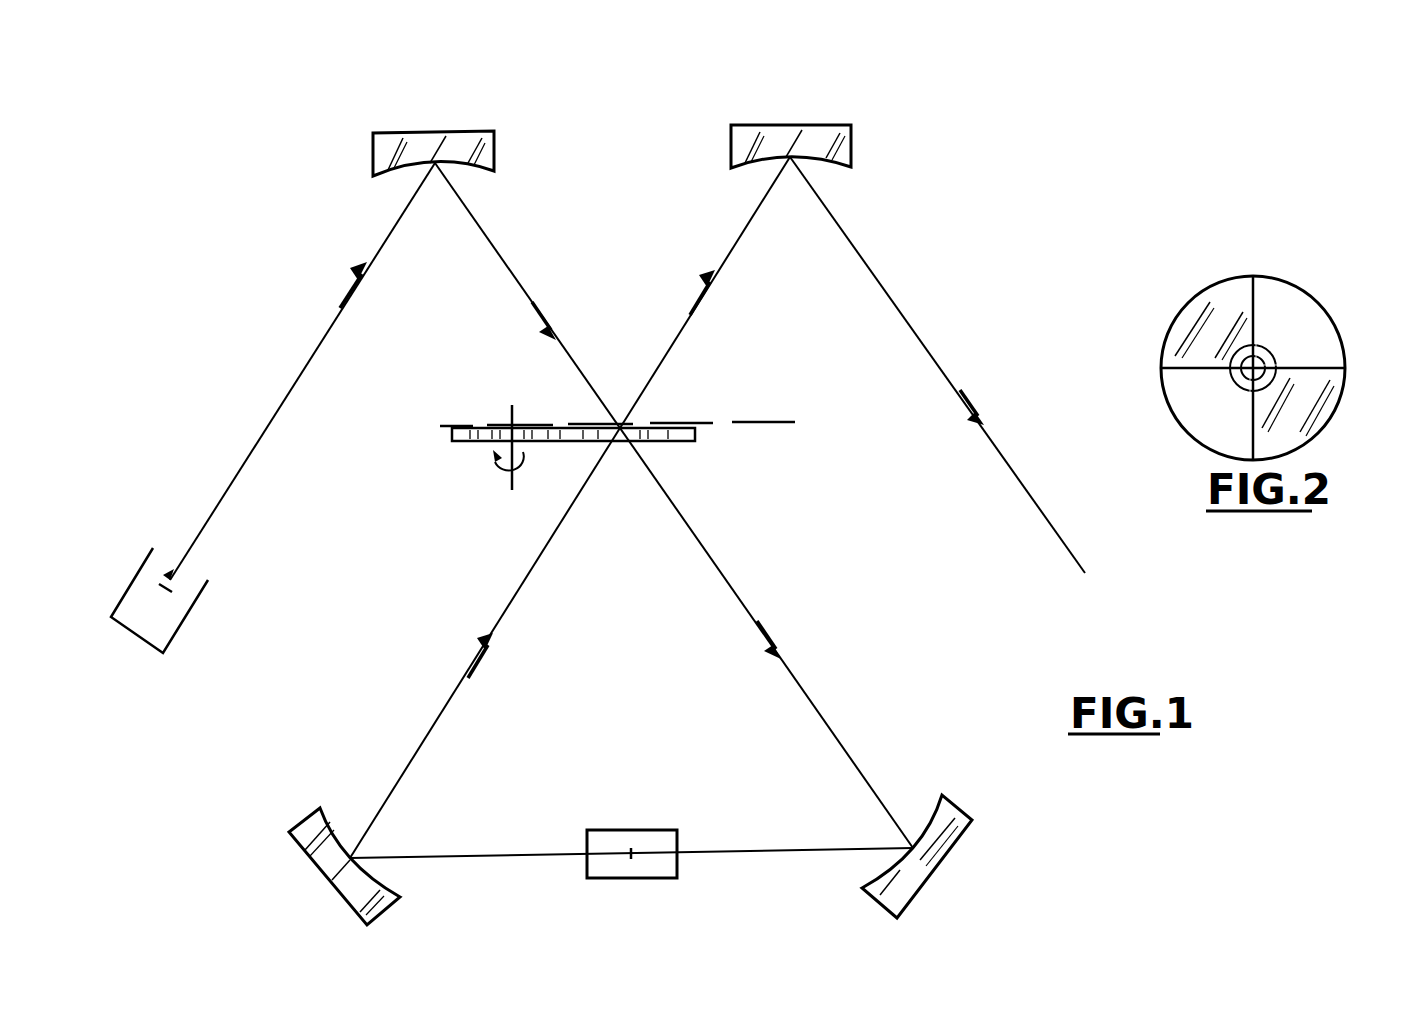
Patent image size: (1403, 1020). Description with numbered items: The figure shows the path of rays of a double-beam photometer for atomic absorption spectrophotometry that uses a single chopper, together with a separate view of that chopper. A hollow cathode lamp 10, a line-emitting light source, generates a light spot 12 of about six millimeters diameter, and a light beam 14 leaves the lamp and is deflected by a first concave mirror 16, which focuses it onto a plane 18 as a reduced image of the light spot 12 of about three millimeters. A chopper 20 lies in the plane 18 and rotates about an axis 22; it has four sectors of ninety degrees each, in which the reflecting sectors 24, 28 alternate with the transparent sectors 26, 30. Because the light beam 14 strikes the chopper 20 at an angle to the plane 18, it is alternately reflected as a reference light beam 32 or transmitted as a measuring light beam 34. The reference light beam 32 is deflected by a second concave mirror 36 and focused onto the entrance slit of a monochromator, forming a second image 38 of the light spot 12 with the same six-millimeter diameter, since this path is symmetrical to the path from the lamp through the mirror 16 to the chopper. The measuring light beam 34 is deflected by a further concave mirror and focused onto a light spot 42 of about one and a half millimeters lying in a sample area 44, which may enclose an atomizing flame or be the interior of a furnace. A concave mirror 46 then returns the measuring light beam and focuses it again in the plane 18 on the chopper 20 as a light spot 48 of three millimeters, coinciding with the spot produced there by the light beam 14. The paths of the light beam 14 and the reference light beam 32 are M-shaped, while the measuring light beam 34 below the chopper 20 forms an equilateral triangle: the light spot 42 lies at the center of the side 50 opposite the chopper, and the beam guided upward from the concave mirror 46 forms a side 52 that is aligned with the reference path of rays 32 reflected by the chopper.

In FIG. 1, the hollow cathode lamp 10 is at (131, 578).
In FIG. 1, the light spot 12 is at (164, 584).
In FIG. 1, the light beam 14 is at (297, 378).
In FIG. 1, the first concave mirror 16 is at (494, 150).
In FIG. 1, the plane 18 is at (765, 421).
In FIG. 1, the chopper 20 is at (481, 428).
In FIG. 2, the chopper 20 is at (1322, 292).
In FIG. 1, the axis 22 is at (514, 408).
In FIG. 2, the reflecting sector 24 is at (1172, 342).
In FIG. 2, the transparent sector 26 is at (1330, 341).
In FIG. 2, the reflecting sector 28 is at (1322, 418).
In FIG. 2, the transparent sector 30 is at (1192, 418).
In FIG. 1, the reference light beam 32 is at (722, 262).
In FIG. 1, the measuring light beam 34 is at (728, 582).
In FIG. 1, the second concave mirror 36 is at (851, 135).
In FIG. 1, the second image 38 is at (1085, 573).
In FIG. 1, the light spot 42 is at (632, 856).
In FIG. 1, the sample area 44 is at (615, 830).
In FIG. 1, the concave mirror 46 is at (310, 822).
In FIG. 1, the light spot 48 is at (648, 422).
In FIG. 1, the side 50 is at (475, 856).
In FIG. 1, the side 52 is at (515, 608).